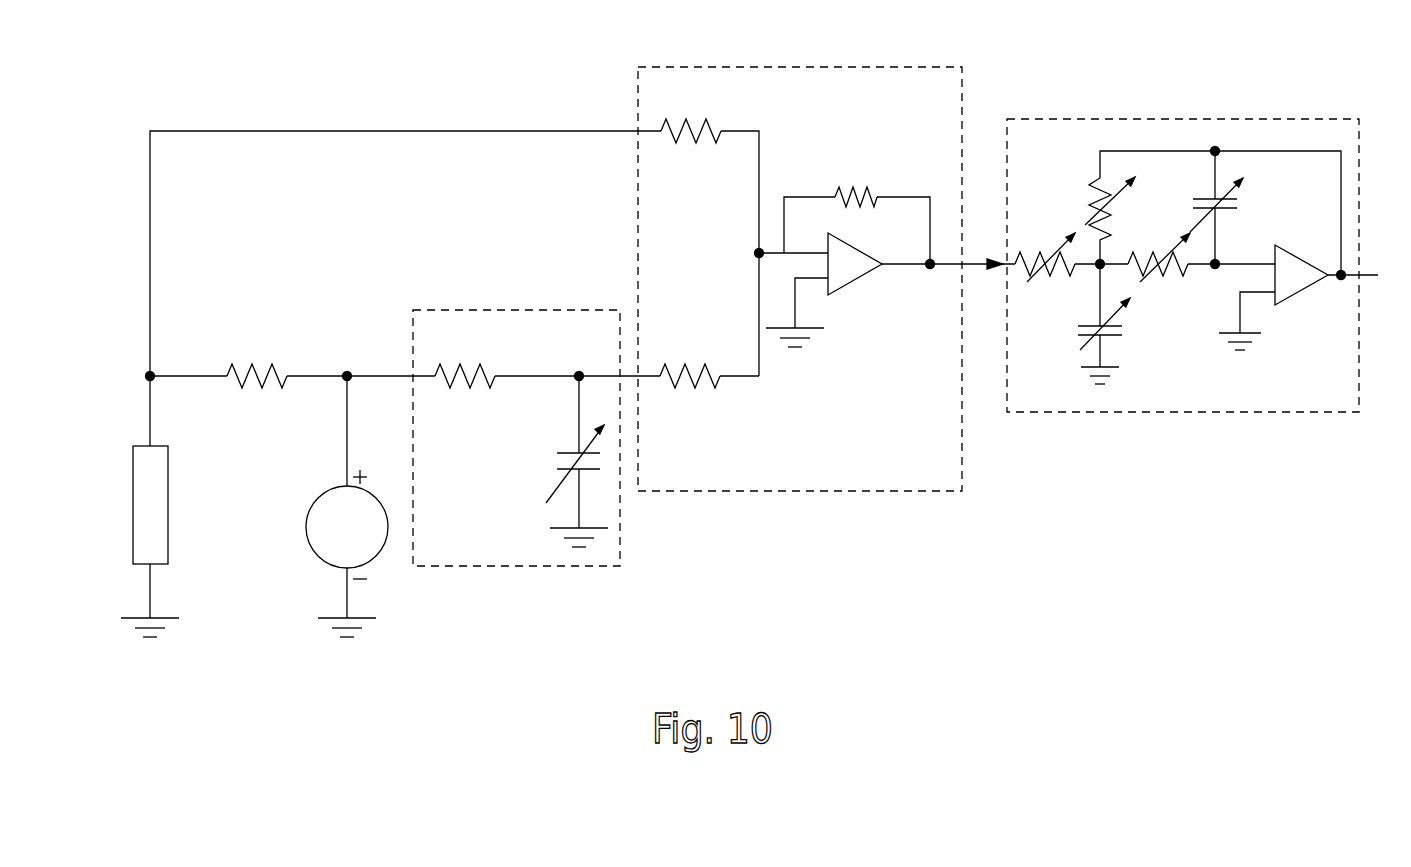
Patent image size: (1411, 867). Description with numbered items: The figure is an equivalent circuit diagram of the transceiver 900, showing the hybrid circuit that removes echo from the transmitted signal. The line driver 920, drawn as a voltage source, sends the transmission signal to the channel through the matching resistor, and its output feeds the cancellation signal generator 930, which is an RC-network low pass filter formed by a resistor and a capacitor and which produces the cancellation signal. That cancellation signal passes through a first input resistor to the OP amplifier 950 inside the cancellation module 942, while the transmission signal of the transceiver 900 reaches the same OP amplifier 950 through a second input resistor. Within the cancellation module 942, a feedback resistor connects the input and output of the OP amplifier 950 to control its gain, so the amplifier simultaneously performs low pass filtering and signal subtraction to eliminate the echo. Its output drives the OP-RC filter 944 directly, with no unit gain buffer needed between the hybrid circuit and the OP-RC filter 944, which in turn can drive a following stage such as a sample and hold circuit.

The transceiver 900 is at (749, 359).
The line driver 920 is at (322, 496).
The cancellation signal generator 930 is at (542, 310).
The cancellation module 942 is at (826, 261).
The OP-RC filter 944 is at (1260, 411).
The OP amplifier 950 is at (855, 278).